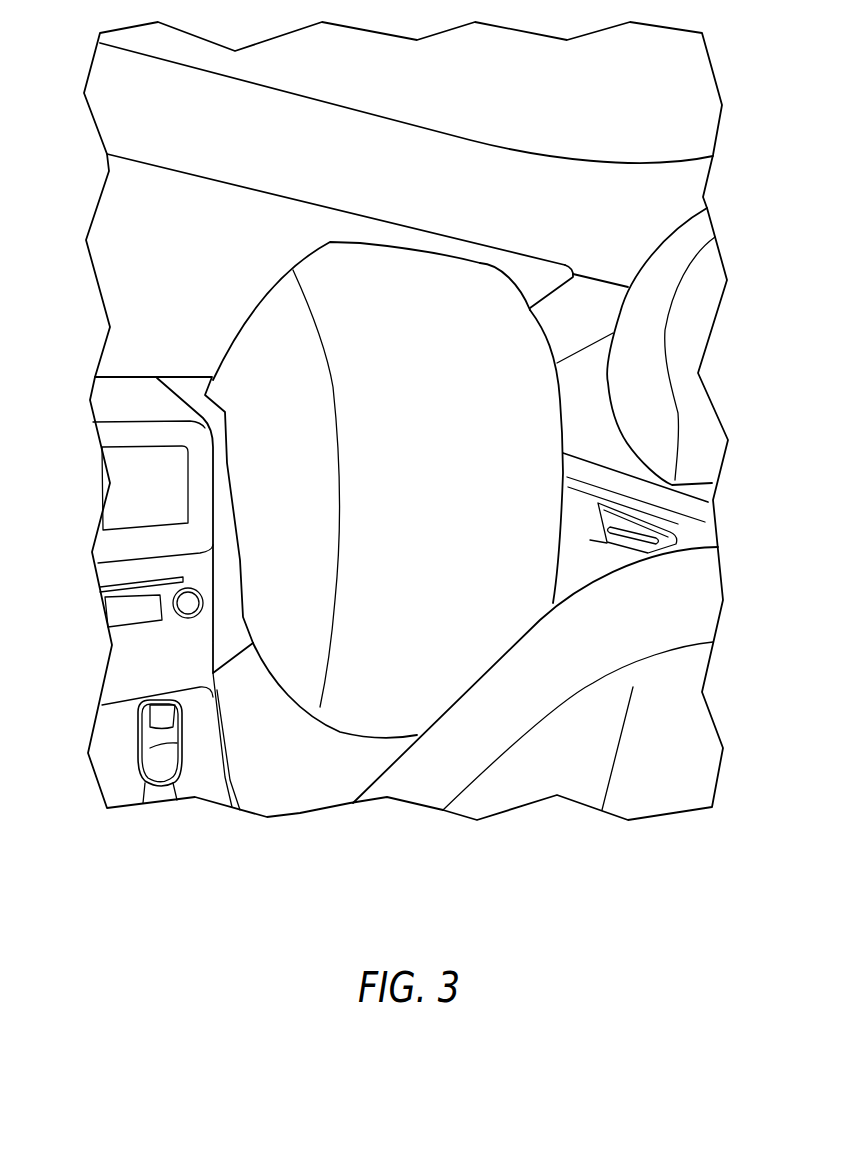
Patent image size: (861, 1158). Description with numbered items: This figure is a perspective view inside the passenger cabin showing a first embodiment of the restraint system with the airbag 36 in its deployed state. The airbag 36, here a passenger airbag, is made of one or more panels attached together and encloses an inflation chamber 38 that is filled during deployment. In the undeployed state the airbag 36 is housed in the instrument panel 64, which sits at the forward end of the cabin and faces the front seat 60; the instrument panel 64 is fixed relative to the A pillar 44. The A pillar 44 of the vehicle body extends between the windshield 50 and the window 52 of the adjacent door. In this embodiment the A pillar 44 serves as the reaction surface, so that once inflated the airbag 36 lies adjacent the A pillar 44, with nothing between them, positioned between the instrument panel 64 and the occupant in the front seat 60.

The airbag 36 is at (487, 267).
The inflation chamber 38 is at (290, 653).
The A pillar 44 is at (582, 355).
The windshield 50 is at (181, 263).
The window 52 is at (590, 413).
The front seat 60 is at (377, 773).
The instrument panel 64 is at (182, 375).